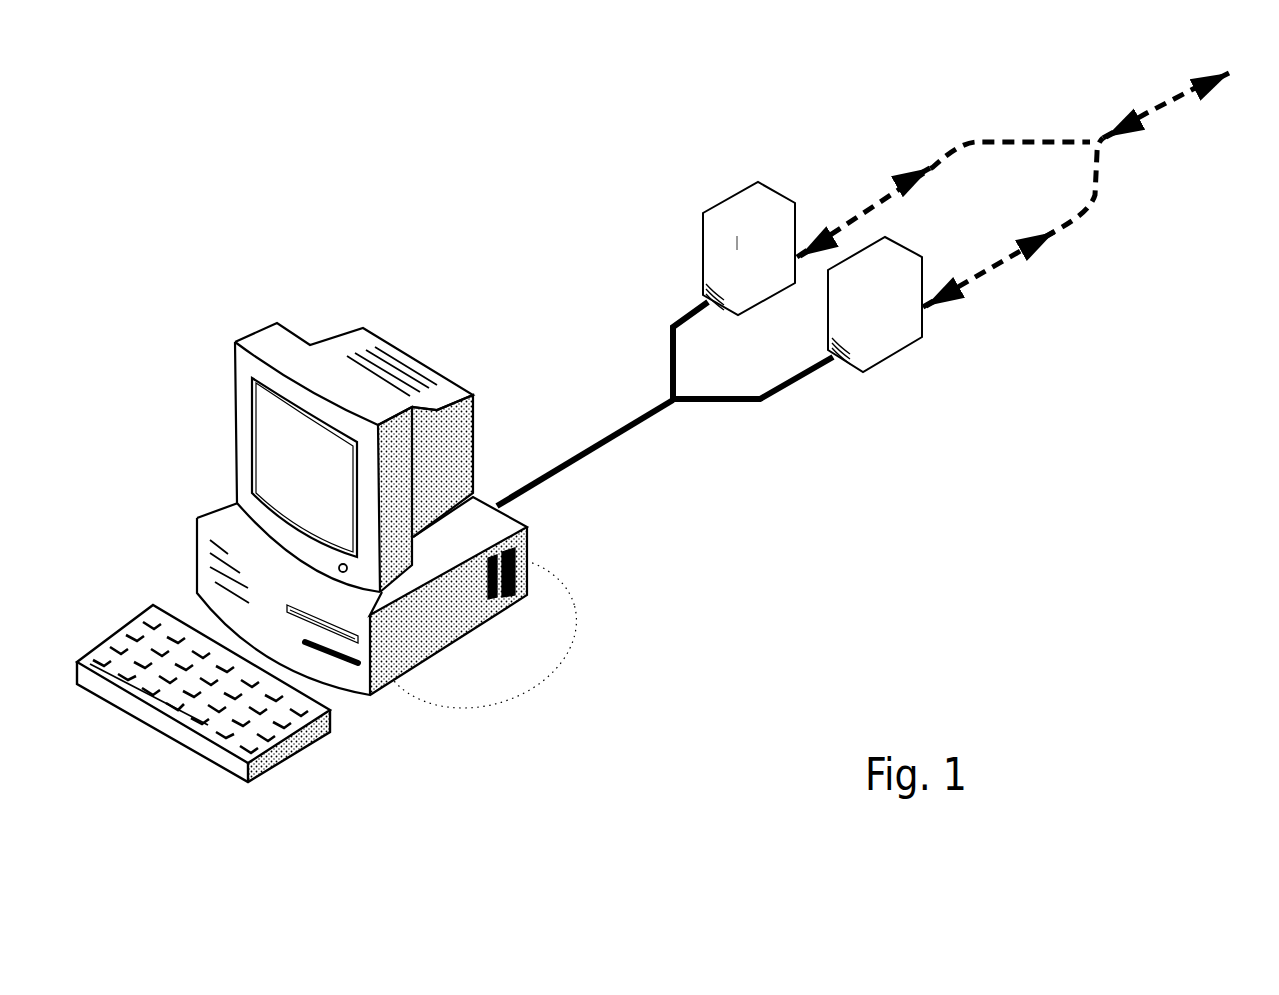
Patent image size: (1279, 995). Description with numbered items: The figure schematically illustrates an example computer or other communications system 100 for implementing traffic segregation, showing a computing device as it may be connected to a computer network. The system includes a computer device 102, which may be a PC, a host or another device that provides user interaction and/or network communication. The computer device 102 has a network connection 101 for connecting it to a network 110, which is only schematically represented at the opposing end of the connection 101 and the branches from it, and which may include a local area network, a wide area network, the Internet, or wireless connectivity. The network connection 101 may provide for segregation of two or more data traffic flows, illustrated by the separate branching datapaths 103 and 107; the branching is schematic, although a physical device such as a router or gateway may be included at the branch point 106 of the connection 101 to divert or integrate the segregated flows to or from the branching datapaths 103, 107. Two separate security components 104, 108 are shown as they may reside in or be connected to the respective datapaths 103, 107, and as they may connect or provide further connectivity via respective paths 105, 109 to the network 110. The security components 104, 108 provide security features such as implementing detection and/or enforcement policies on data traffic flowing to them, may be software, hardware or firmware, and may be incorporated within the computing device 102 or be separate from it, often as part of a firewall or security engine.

The communications system 100 is at (279, 131).
The network connection 101 is at (580, 446).
The computer device 102 is at (236, 388).
The branching datapath 103 is at (679, 315).
The security component 104 is at (711, 203).
The path 105 is at (859, 205).
The branch point 106 is at (678, 408).
The branching datapath 107 is at (746, 410).
The security component 108 is at (927, 332).
The path 109 is at (999, 277).
The network 110 is at (1171, 107).